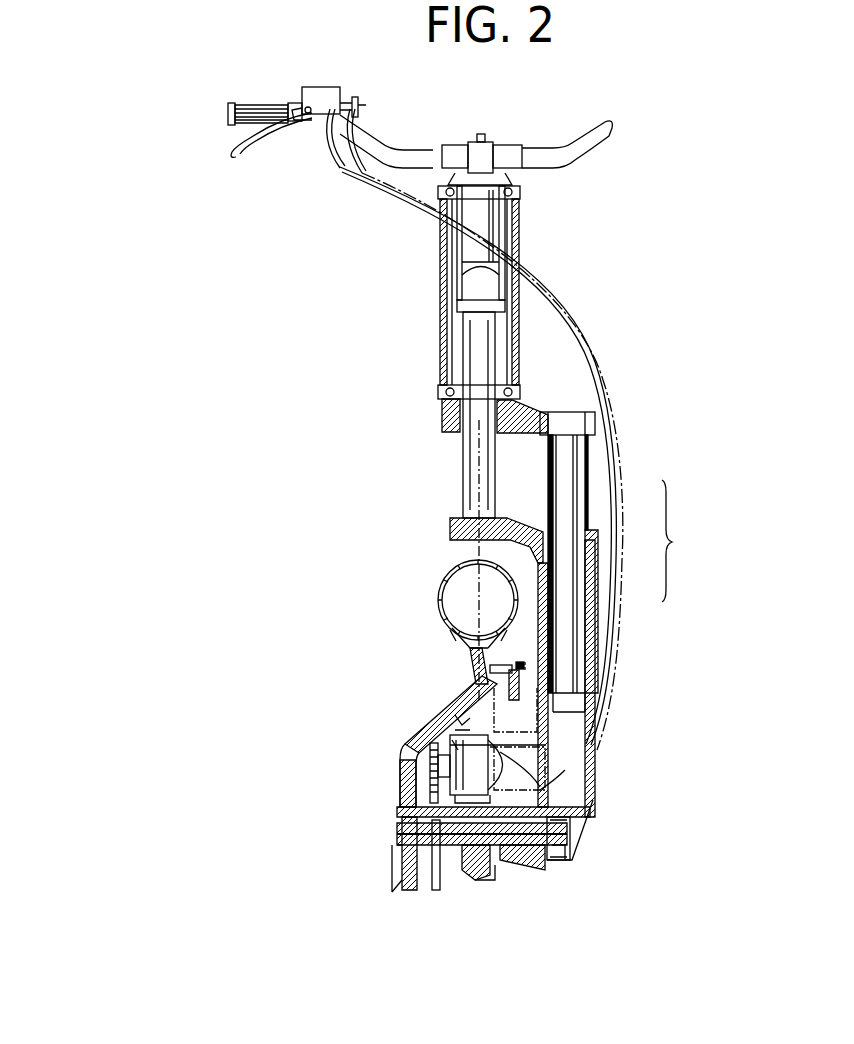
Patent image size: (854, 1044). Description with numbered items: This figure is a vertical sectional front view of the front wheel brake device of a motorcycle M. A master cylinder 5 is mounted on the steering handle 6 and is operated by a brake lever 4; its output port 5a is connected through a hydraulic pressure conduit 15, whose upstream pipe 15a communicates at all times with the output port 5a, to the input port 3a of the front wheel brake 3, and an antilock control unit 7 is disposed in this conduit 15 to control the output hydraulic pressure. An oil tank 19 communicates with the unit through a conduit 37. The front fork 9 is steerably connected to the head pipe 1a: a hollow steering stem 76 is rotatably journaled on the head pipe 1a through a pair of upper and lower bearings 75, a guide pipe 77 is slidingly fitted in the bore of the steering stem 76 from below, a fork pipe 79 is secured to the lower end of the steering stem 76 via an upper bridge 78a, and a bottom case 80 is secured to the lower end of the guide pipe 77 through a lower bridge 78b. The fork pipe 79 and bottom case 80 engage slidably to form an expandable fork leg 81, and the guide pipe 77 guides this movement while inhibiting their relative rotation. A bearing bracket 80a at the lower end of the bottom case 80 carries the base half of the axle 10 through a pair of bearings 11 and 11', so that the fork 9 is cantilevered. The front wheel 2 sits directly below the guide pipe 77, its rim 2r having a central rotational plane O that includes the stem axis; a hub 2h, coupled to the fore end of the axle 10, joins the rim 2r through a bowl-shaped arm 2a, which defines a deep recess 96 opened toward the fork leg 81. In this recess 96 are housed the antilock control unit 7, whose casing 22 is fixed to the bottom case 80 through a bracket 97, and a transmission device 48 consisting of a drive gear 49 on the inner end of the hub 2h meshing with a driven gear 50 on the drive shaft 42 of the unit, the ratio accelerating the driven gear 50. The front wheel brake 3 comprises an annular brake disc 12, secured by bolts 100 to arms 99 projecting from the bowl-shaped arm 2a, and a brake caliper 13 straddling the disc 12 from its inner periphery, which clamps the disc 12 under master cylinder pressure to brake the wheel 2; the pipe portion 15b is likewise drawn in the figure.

The head pipe 1a is at (508, 238).
The front wheel 2 is at (445, 570).
The bowl-shaped arm 2a is at (427, 736).
The hub 2h is at (400, 809).
The rim 2r is at (456, 642).
The front wheel brake 3 is at (529, 648).
The input port 3a is at (520, 733).
The brake lever 4 is at (267, 133).
The master cylinder 5 is at (298, 92).
The output port 5a is at (355, 97).
The steering handle 6 is at (584, 142).
The antilock control unit 7 is at (476, 710).
The front fork 9 is at (599, 467).
The axle 10 is at (515, 845).
The bearing 11 is at (515, 865).
The bearing 11' is at (554, 874).
The brake disc 12 is at (521, 684).
The brake caliper 13 is at (471, 708).
The hydraulic pressure conduit 15 is at (591, 339).
The upstream pipe 15a is at (598, 367).
The cable inner wire end 15b is at (536, 795).
The oil tank 19 is at (324, 88).
The casing 22 is at (458, 780).
The conduit 37 is at (340, 152).
The drive shaft 42 is at (430, 770).
The transmission device 48 is at (412, 899).
The drive gear 49 is at (437, 890).
The driven gear 50 is at (440, 762).
The bearings 75 is at (440, 190).
The steering stem 76 is at (447, 370).
The guide pipe 77 is at (463, 478).
The upper bridge 78a is at (521, 405).
The lower bridge 78b is at (508, 520).
The fork pipe 79 is at (577, 498).
The bottom case 80 is at (598, 589).
The bearing bracket 80a is at (490, 880).
The fork leg 81 is at (679, 541).
The recess 96 is at (455, 706).
The bracket 97 is at (530, 774).
The arms 99 is at (490, 669).
The bolts 100 is at (524, 665).
The motorcycle M is at (557, 273).
The central rotational plane O is at (478, 600).